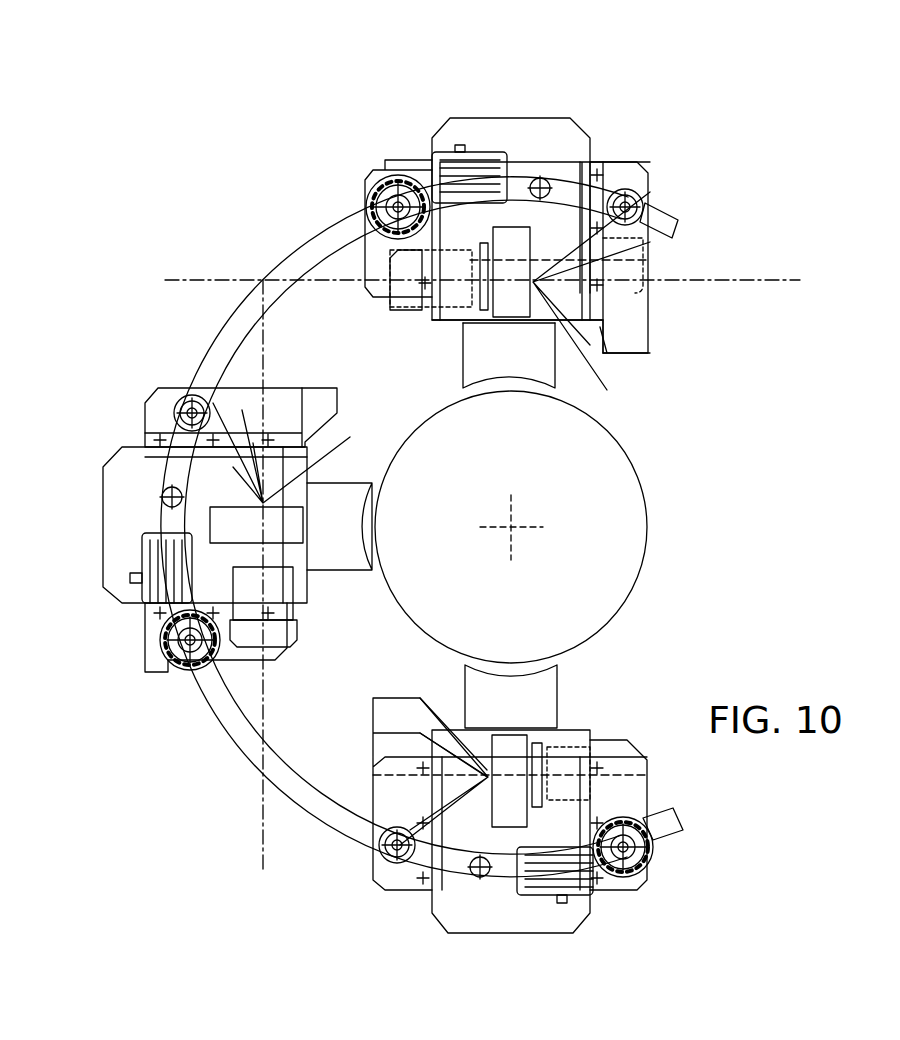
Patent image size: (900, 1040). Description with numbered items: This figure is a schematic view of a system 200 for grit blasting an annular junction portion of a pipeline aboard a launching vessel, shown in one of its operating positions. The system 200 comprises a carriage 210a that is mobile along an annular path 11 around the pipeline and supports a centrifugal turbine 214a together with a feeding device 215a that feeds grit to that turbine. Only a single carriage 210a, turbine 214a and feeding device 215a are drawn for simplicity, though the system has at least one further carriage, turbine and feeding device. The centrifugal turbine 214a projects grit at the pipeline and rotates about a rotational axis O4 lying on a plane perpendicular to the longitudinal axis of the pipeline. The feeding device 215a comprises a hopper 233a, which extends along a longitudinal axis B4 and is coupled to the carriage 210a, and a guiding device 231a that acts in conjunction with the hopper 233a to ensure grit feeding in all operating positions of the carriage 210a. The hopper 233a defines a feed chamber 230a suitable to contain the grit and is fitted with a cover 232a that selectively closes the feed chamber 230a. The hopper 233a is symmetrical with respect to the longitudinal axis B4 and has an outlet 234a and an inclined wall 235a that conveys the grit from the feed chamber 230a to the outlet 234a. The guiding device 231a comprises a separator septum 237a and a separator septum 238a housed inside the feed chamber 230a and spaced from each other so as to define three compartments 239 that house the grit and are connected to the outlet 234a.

The system 200 is at (792, 128).
The carriage 210a is at (550, 133).
The centrifugal turbine 214a is at (420, 167).
The feeding device 215a is at (553, 170).
The feed chamber 230a is at (622, 287).
The guiding device 231a is at (669, 361).
The cover 232a is at (650, 252).
The hopper 233a is at (657, 207).
The outlet 234a is at (607, 390).
The inclined wall 235a is at (565, 238).
The separator septum 237a is at (346, 410).
The separator septum 238a is at (213, 402).
The compartments 239 is at (236, 468).
The annular path 11 is at (278, 248).
The rotational axis O4 is at (210, 277).
The longitudinal axis B4 is at (790, 280).